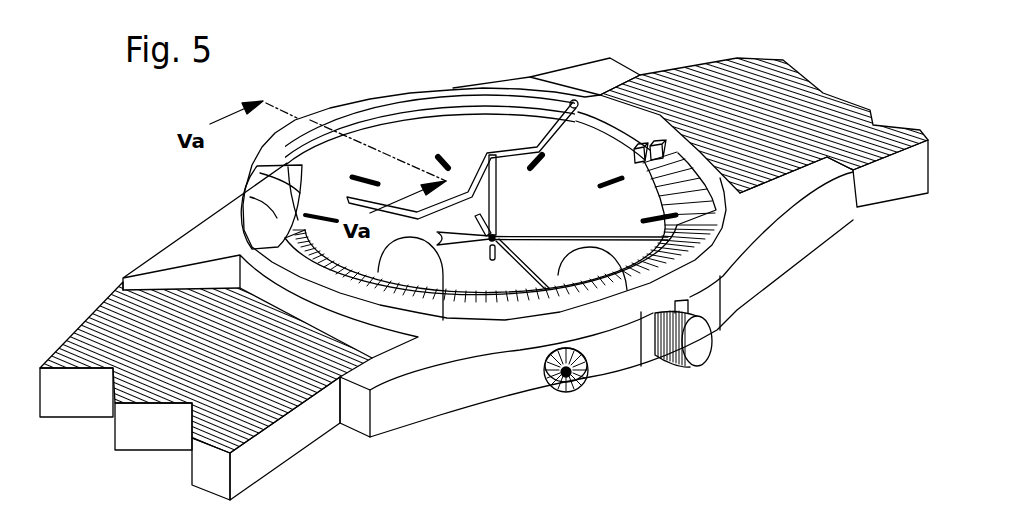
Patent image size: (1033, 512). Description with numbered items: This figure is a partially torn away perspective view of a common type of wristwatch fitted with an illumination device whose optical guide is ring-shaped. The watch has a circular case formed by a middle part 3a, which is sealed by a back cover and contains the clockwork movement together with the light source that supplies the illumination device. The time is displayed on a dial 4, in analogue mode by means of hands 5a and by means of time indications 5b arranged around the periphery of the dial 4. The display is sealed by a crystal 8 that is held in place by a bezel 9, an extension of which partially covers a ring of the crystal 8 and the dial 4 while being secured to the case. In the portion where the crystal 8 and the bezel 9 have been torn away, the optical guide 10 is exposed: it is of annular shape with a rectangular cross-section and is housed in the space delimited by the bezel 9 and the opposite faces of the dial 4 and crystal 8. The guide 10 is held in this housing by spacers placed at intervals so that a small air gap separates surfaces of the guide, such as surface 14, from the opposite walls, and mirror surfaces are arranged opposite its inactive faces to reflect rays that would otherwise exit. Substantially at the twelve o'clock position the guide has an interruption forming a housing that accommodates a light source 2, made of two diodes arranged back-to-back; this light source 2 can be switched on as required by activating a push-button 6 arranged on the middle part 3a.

The light source 2 is at (652, 142).
The middle part 3a is at (503, 375).
The dial 4 is at (627, 290).
The hands 5a is at (323, 216).
The time indications 5b is at (370, 180).
The push-button 6 is at (580, 386).
The crystal 8 is at (488, 208).
The bezel 9 is at (532, 107).
The optical guide 10 is at (700, 253).
The surface of the guide 14 is at (443, 320).